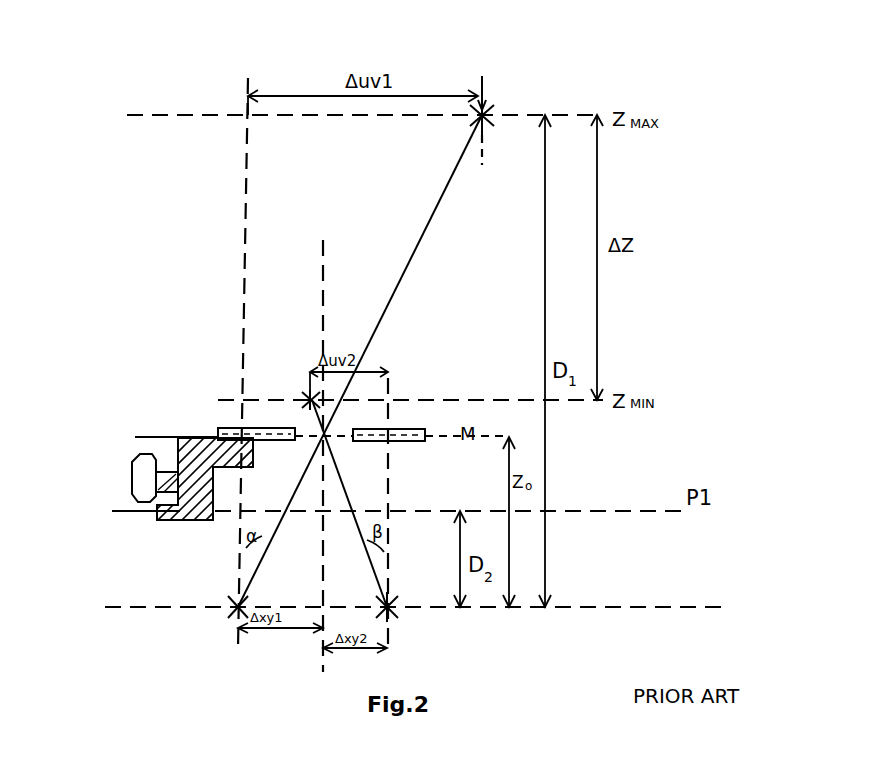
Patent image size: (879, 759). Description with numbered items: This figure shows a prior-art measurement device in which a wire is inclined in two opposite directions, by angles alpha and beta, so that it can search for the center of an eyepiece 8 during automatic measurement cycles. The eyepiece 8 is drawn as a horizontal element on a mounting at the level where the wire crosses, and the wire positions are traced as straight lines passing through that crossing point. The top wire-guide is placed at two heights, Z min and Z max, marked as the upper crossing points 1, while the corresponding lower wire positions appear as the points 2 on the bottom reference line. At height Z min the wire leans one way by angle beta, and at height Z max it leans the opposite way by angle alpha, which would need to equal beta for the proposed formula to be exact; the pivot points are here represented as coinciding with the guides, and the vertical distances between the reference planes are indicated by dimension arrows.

The object point 1 is at (490, 113).
The image point 2 is at (230, 614).
The eyepiece 8 is at (232, 428).